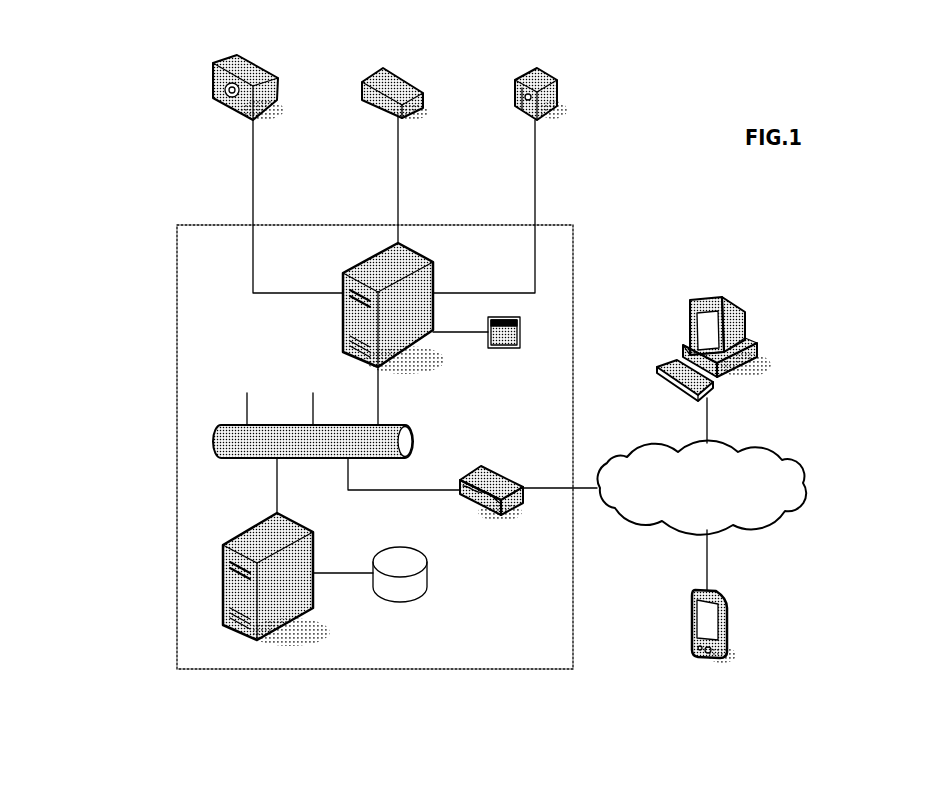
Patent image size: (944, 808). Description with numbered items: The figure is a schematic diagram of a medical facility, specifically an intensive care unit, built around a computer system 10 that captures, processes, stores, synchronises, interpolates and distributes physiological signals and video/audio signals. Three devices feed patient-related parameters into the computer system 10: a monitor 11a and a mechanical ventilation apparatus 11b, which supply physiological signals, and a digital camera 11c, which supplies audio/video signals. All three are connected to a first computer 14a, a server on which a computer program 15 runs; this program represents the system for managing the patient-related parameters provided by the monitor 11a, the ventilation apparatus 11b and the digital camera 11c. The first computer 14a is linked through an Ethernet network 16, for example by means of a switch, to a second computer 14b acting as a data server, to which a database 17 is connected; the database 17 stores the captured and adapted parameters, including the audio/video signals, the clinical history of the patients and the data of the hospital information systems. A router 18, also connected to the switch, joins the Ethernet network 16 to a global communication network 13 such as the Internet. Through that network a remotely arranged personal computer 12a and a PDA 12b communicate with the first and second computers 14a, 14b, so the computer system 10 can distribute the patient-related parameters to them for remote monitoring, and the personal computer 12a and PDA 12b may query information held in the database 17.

The computer system 10 is at (156, 437).
The monitor 11a is at (277, 78).
The mechanical ventilation apparatus 11b is at (421, 84).
The digital camera 11c is at (557, 88).
The personal computer 12a is at (763, 348).
The Personal Digital Assistant (PDA) 12b is at (728, 620).
The global communication network 13 is at (812, 467).
The first computer 14a is at (423, 255).
The second computer 14b is at (223, 590).
The computer program 15 is at (540, 332).
The Ethernet network 16 is at (232, 462).
The database 17 is at (398, 602).
The router 18 is at (497, 472).